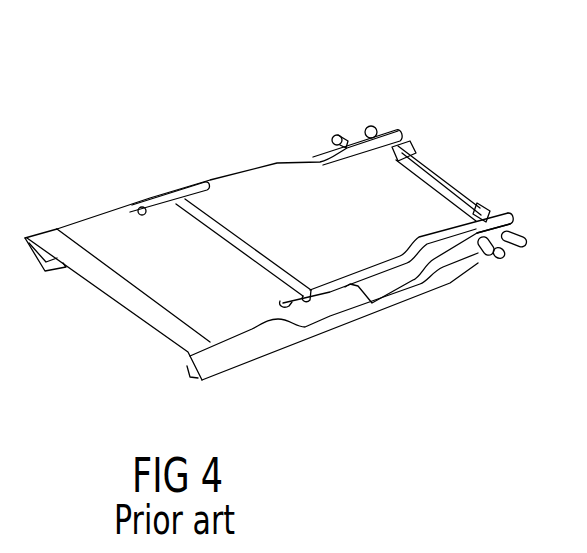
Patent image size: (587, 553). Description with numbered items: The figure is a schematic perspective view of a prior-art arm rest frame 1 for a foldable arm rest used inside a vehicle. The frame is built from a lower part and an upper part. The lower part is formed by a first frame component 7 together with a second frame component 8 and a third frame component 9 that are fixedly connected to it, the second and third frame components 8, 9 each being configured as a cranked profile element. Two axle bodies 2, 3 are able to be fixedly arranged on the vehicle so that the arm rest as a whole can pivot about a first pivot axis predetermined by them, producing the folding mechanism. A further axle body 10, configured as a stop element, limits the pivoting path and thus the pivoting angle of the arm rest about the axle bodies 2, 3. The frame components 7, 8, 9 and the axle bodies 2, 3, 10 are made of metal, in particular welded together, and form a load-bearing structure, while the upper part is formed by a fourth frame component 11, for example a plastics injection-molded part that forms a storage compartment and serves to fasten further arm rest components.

The arm rest frame 1 is at (85, 110).
The axle body 2 is at (335, 136).
The axle body 3 is at (500, 260).
The first frame component 7 is at (170, 222).
The second frame component 8 is at (395, 132).
The third frame component 9 is at (509, 210).
The further axle body 10 is at (452, 186).
The fourth frame component 11 is at (90, 218).